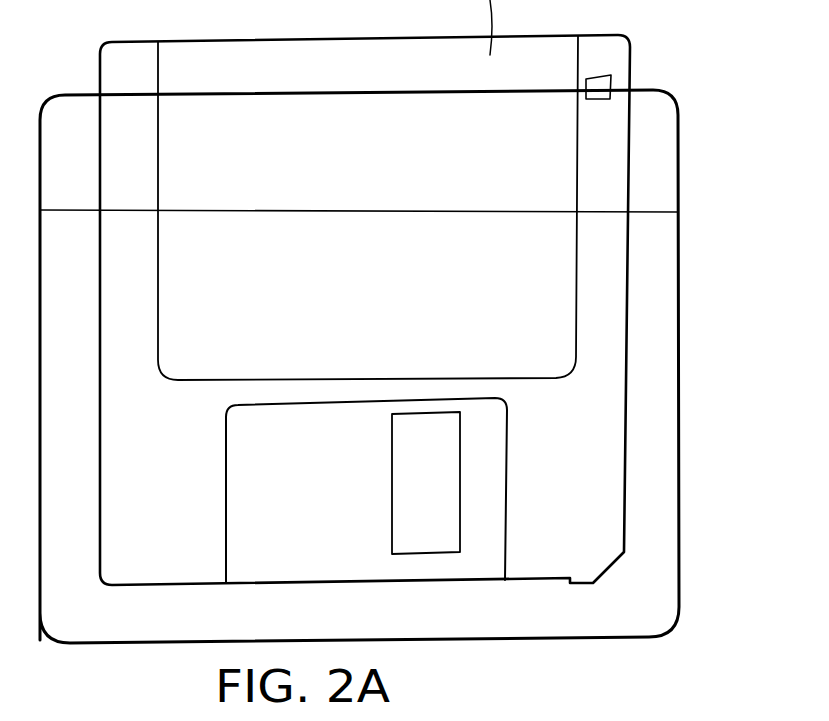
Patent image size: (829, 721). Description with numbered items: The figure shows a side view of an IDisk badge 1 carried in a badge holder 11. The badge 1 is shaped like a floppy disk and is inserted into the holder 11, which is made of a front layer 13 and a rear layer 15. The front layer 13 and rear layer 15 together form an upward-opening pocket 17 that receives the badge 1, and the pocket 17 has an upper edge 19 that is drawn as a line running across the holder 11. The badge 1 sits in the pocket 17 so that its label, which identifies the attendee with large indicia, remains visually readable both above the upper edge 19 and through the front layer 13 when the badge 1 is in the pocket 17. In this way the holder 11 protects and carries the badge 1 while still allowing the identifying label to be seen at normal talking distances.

The IDisk badge 1 is at (638, 57).
The badge holder 11 is at (678, 413).
The front layer 13 is at (655, 326).
The rear layer 15 is at (655, 115).
The pocket 17 is at (600, 187).
The upper edge 19 is at (648, 210).